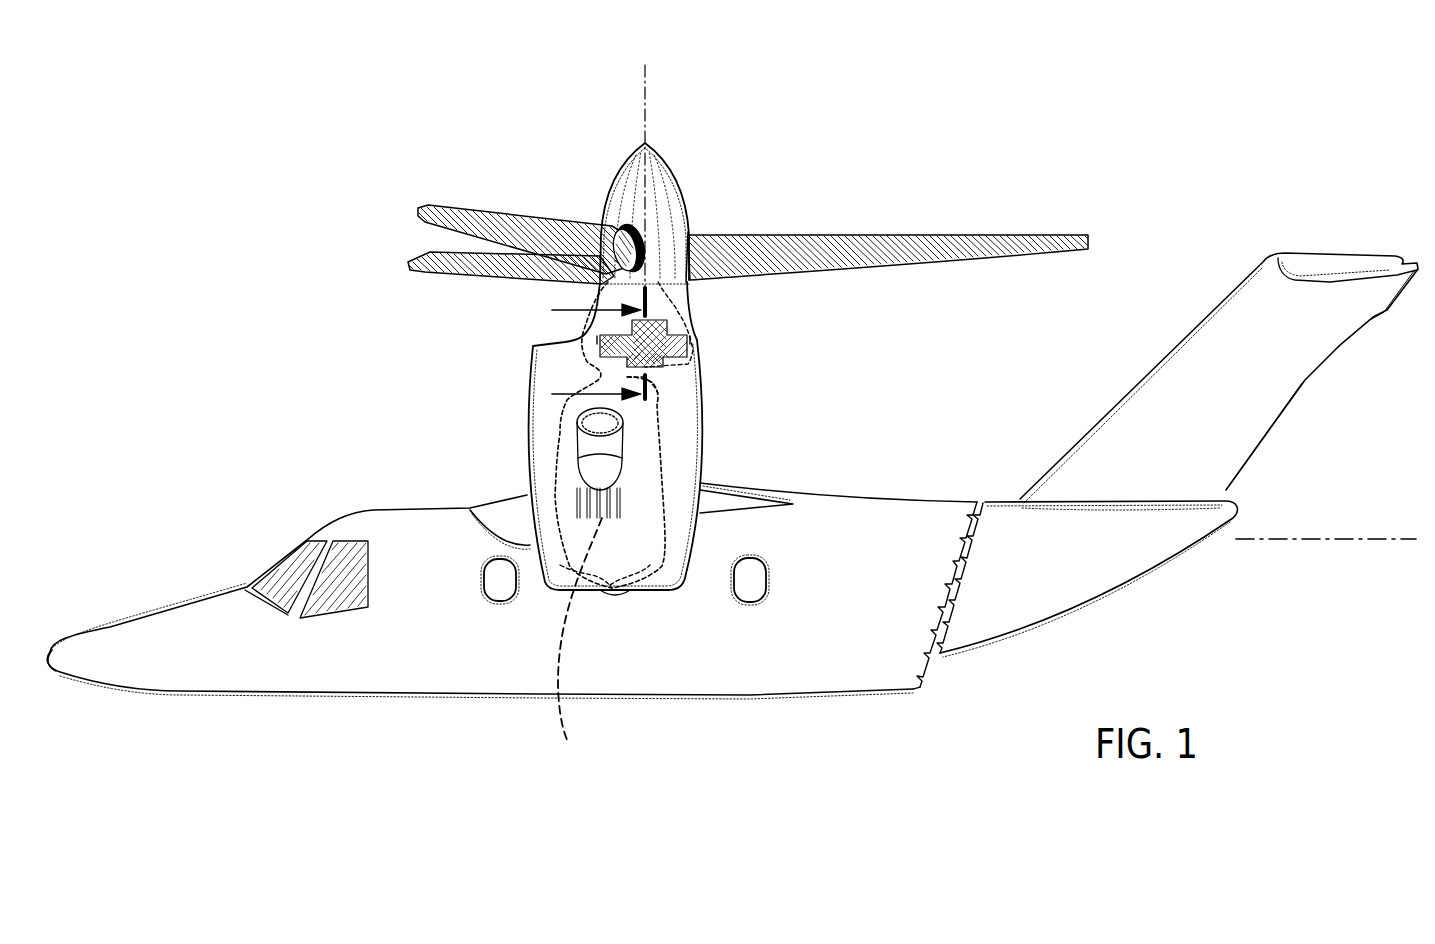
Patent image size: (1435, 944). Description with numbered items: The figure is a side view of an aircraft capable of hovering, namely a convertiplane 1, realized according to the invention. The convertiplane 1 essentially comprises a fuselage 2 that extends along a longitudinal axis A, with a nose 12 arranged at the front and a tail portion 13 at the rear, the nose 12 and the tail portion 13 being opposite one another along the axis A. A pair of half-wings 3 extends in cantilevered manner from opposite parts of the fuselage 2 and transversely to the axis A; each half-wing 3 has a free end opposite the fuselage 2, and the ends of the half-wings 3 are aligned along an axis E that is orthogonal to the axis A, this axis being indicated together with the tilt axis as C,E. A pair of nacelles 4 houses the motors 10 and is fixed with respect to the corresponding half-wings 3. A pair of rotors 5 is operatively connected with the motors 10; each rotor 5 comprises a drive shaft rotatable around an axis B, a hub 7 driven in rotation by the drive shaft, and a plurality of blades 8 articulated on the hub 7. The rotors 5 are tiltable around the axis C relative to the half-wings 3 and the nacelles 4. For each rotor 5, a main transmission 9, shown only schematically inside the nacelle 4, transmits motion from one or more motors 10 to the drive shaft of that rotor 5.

The convertiplane 1 is at (792, 168).
The fuselage 2 is at (853, 535).
The half-wing 3 is at (718, 502).
The nacelle 4 is at (673, 410).
The rotor 5 is at (560, 203).
The hub 7 is at (688, 257).
The blade 8 is at (498, 226).
The main transmission 9 is at (590, 351).
The motor 10 is at (640, 540).
The nose 12 is at (175, 645).
The tail portion 13 is at (1184, 527).
The axis of longitudinal extension A is at (1368, 545).
The rotor axis B is at (648, 106).
The tilt axis and half-wing axis C,E is at (582, 646).